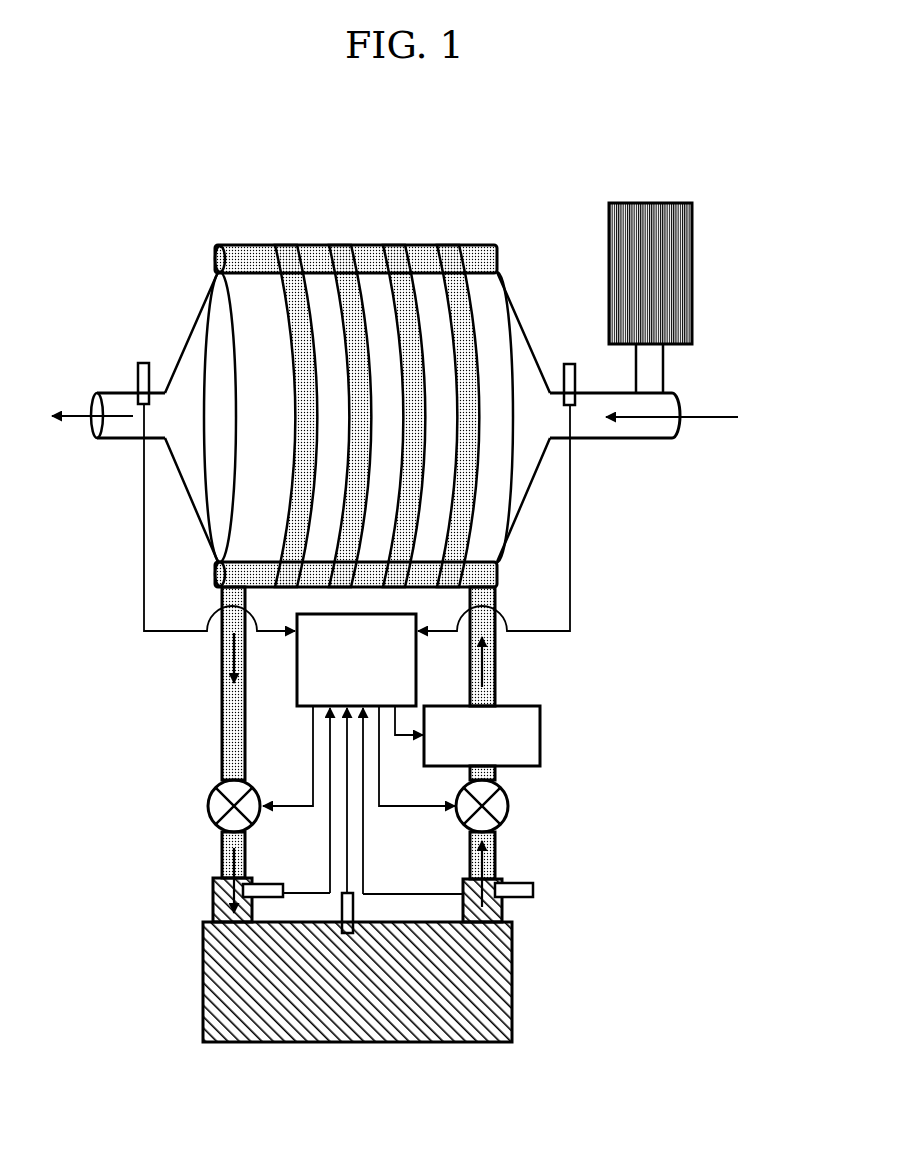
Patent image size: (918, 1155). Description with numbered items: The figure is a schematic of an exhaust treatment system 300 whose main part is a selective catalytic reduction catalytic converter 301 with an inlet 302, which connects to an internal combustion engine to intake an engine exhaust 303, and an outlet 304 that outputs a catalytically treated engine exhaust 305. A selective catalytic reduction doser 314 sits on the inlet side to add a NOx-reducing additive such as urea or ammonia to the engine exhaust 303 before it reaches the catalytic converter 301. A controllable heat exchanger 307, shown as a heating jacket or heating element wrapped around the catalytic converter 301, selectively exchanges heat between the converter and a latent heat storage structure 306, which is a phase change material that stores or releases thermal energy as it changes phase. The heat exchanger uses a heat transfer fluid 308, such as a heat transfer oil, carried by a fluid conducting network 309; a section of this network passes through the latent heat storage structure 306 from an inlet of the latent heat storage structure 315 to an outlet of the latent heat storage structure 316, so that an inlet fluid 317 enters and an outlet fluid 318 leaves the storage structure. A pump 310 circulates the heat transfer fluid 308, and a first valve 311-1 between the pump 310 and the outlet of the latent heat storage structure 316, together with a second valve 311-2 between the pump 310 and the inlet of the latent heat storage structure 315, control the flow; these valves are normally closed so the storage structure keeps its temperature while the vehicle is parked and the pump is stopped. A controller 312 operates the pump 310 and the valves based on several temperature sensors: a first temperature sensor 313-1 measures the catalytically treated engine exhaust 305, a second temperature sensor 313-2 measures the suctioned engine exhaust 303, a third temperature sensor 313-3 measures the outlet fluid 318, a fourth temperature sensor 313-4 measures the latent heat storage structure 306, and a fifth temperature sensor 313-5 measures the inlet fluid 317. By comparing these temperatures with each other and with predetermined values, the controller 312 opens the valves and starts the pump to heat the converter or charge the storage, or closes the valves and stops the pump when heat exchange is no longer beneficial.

The exhaust treatment system 300 is at (203, 211).
The selective catalytic reduction catalytic converter 301 is at (490, 365).
The inlet 302 is at (640, 432).
The engine exhaust 303 is at (725, 417).
The outlet 304 is at (134, 428).
The catalytically treated engine exhaust 305 is at (74, 412).
The latent heat storage structure 306 is at (500, 965).
The controllable heat exchanger 307 is at (306, 245).
The heat transfer fluid 308 is at (486, 665).
The fluid conducting network 309 is at (497, 571).
The pump 310 is at (529, 745).
The first valve 311-1 is at (508, 806).
The second valve 311-2 is at (213, 808).
The controller 312 is at (308, 686).
The first temperature sensor 313-1 is at (143, 363).
The second temperature sensor 313-2 is at (570, 364).
The third temperature sensor 313-3 is at (535, 892).
The fourth temperature sensor 313-4 is at (353, 905).
The fifth temperature sensor 313-5 is at (268, 885).
The selective catalytic reduction doser 314 is at (670, 282).
The inlet of the latent heat storage structure 315 is at (220, 915).
The outlet of the latent heat storage structure 316 is at (492, 918).
The inlet fluid 317 is at (228, 875).
The outlet fluid 318 is at (488, 870).